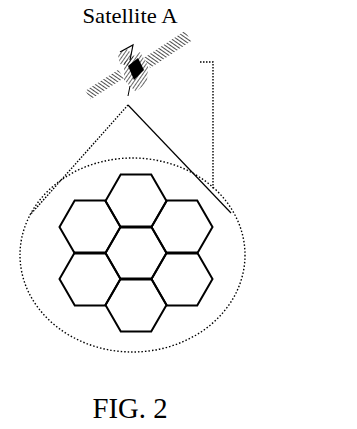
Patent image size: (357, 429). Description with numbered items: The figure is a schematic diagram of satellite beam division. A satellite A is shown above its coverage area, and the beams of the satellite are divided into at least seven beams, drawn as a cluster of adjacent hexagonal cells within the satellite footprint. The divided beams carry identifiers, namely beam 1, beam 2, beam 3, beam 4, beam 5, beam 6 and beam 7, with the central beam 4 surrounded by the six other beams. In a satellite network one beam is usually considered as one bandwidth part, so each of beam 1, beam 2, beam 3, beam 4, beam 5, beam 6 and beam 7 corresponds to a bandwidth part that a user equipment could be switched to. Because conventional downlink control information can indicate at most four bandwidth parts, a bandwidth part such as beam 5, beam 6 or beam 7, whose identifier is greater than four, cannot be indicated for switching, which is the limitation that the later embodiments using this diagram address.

The beam 1 is at (90, 227).
The beam 2 is at (90, 279).
The beam 3 is at (136, 201).
The beam 4 is at (136, 253).
The beam 5 is at (136, 305).
The beam 6 is at (182, 227).
The beam 7 is at (182, 279).